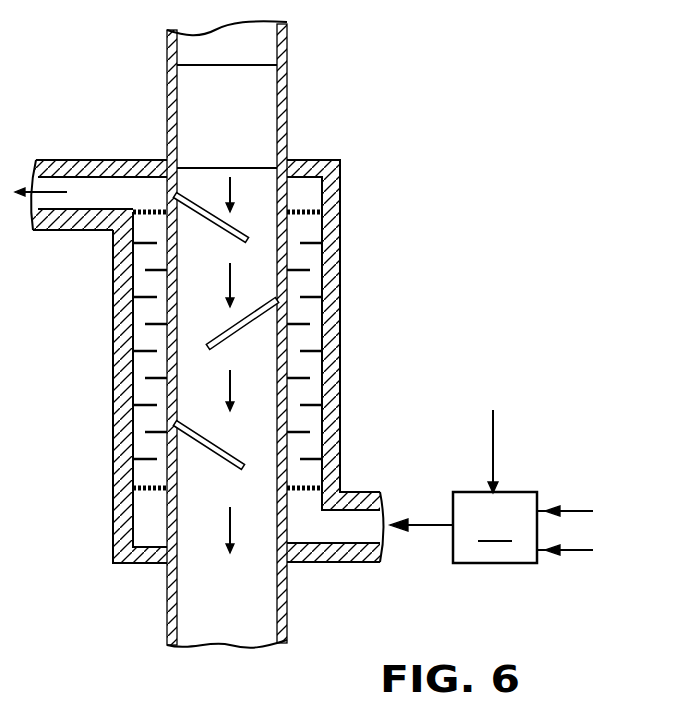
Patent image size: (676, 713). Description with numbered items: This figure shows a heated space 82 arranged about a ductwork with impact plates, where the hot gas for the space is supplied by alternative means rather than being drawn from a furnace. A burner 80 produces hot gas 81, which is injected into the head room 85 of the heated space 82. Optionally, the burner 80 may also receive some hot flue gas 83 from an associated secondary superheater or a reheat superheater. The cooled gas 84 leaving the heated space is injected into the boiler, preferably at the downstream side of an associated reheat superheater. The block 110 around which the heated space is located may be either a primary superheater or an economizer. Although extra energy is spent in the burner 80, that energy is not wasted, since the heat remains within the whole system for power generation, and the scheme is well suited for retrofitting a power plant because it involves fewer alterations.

The block 110 is at (237, 125).
The cooled gas 84 is at (53, 192).
The head room 85 is at (147, 518).
The heated space 82 is at (315, 282).
The burner 80 is at (563, 539).
The hot gas 81 is at (429, 524).
The hot flue gas 83 is at (494, 432).